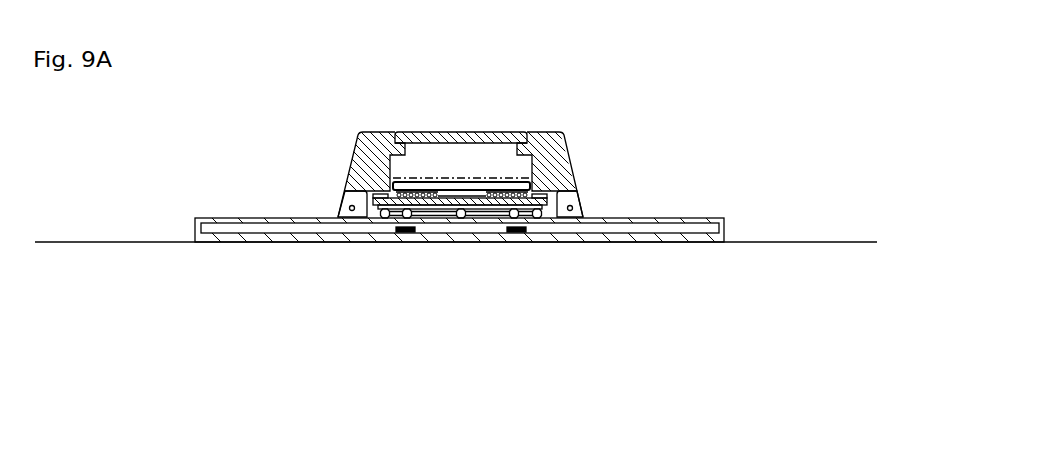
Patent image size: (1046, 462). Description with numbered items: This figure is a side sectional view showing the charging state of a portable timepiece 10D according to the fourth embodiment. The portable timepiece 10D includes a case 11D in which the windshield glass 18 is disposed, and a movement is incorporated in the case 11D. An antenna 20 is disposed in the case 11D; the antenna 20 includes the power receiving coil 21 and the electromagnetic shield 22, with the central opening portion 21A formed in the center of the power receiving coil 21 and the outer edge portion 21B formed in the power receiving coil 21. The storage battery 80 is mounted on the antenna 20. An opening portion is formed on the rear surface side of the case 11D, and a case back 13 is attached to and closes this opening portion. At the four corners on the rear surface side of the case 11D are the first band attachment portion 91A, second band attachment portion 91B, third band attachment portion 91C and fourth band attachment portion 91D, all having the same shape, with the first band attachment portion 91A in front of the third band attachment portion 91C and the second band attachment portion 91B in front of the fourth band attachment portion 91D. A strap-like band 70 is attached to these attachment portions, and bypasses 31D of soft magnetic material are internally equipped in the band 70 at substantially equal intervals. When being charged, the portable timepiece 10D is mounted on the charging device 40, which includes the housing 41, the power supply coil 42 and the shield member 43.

The portable timepiece 10D is at (534, 90).
The case 11D is at (561, 134).
The case back 13 is at (474, 201).
The windshield glass 18 is at (452, 176).
The antenna 20 is at (457, 162).
The power receiving coil 21 is at (540, 195).
The central opening portion 21A is at (471, 178).
The outer edge portion 21B is at (290, 226).
The electromagnetic shield 22 is at (450, 178).
The bypasses 31D is at (393, 212).
The charging device 40 is at (459, 290).
The housing 41 is at (675, 238).
The power supply coil 42 is at (532, 233).
The shield member 43 is at (457, 217).
The band 70 is at (430, 216).
The storage battery 80 is at (474, 165).
The first band attachment portion 91A is at (386, 197).
The second band attachment portion 91B is at (583, 218).
The third band attachment portion 91C is at (281, 244).
The fourth band attachment portion 91D is at (585, 267).